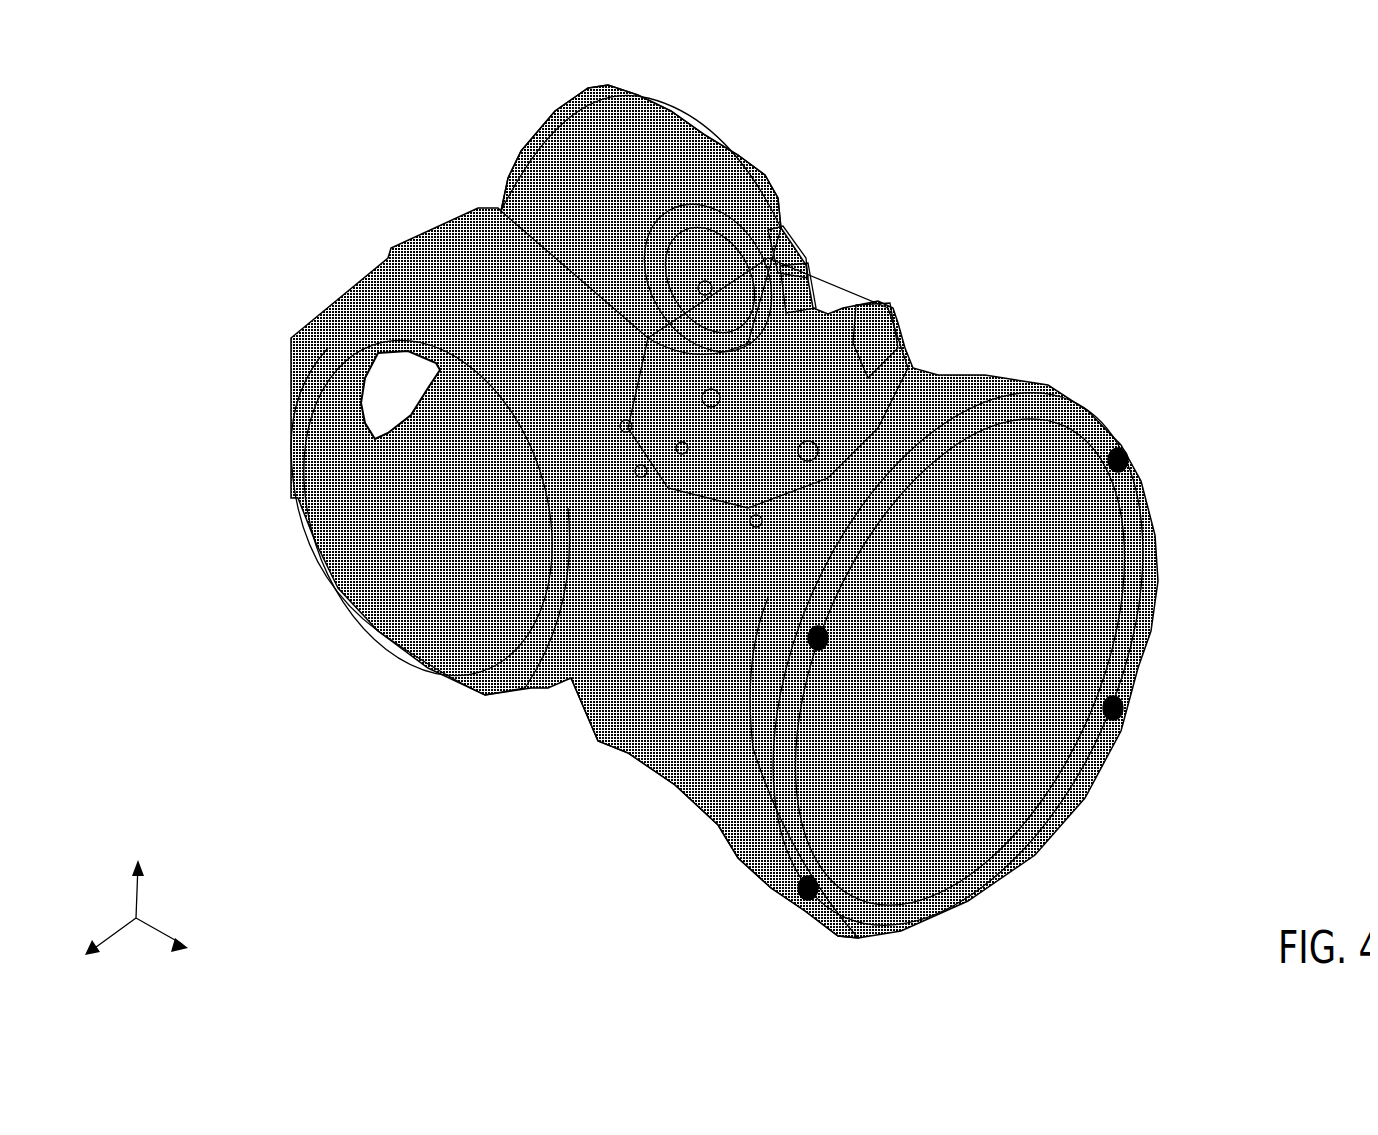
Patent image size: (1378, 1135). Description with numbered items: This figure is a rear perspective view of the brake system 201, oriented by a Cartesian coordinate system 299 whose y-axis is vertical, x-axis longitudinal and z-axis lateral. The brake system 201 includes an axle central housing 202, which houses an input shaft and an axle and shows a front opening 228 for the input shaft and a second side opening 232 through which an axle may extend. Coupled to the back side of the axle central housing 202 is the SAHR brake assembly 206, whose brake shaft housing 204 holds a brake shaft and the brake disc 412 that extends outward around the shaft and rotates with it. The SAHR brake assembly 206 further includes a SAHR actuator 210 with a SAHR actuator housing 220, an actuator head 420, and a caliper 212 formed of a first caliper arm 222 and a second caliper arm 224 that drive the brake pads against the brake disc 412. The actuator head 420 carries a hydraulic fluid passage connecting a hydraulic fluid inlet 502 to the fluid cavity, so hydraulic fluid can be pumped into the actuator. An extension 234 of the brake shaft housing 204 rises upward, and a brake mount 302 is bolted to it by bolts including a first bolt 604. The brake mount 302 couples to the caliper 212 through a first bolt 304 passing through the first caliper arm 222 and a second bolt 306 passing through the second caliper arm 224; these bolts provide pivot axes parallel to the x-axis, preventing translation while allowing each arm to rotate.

The brake system 201 is at (1080, 82).
The axle central housing 202 is at (363, 610).
The brake shaft housing 204 is at (698, 780).
The SAHR brake assembly 206 is at (815, 126).
The SAHR actuator 210 is at (690, 66).
The caliper 212 is at (870, 199).
The SAHR actuator housing 220 is at (641, 224).
The first caliper arm 222 is at (777, 257).
The second caliper arm 224 is at (880, 300).
The front opening 228 is at (355, 387).
The second side opening 232 is at (327, 523).
The extension 234 is at (618, 418).
The Cartesian coordinate system 299 is at (175, 812).
The brake mount 302 is at (633, 463).
The first bolt 304 is at (703, 390).
The second bolt 306 is at (800, 443).
The brake disc 412 is at (748, 513).
The actuator head 420 is at (762, 227).
The hydraulic fluid inlet 502 is at (697, 280).
The first bolt 604 is at (674, 440).